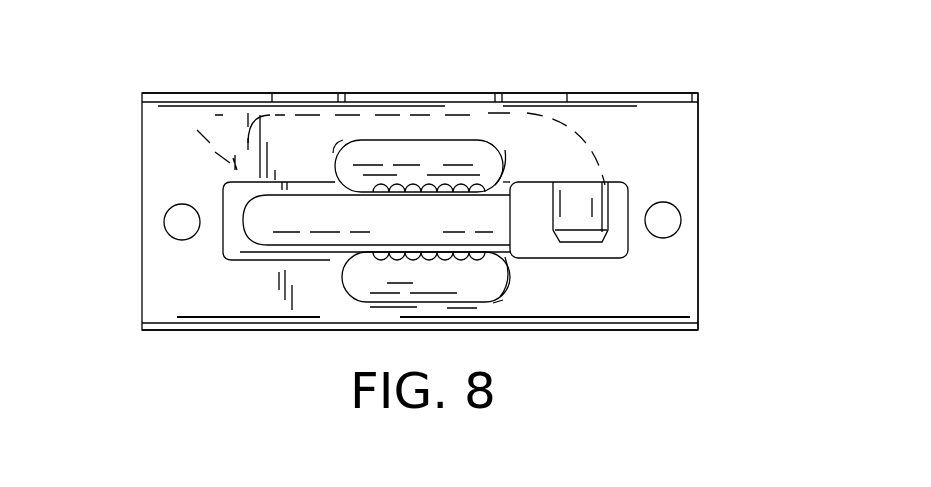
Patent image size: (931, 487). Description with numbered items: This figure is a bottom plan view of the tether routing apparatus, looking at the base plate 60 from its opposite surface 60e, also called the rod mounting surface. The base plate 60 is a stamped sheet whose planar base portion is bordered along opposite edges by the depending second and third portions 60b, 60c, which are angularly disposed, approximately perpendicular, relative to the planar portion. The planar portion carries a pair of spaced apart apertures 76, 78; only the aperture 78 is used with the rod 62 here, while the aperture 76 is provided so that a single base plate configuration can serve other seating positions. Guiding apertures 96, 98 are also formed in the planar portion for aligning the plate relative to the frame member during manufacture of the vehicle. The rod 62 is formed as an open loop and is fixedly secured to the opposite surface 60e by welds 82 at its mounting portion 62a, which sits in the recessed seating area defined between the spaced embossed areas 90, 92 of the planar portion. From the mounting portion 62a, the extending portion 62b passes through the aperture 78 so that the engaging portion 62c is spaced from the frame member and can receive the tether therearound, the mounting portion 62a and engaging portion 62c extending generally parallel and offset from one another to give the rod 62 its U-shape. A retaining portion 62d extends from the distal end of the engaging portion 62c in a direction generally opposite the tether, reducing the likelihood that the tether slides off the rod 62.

The base plate 60 is at (140, 290).
The second portion of base plate 60b is at (618, 90).
The third portion of base plate 60c is at (623, 332).
The opposite surface of base plate 60e is at (682, 268).
The rod 62 is at (277, 250).
The mounting portion of rod 62a is at (360, 228).
The extending portion of rod 62b is at (188, 122).
The engaging portion of rod 62c is at (507, 113).
The retaining portion of rod 62d is at (600, 217).
The aperture 76 is at (622, 197).
The aperture 78 is at (222, 188).
The welds 82 is at (407, 188).
The embossed area 90 is at (430, 160).
The embossed area 92 is at (462, 287).
The guiding aperture 96 is at (175, 223).
The guiding aperture 98 is at (672, 222).